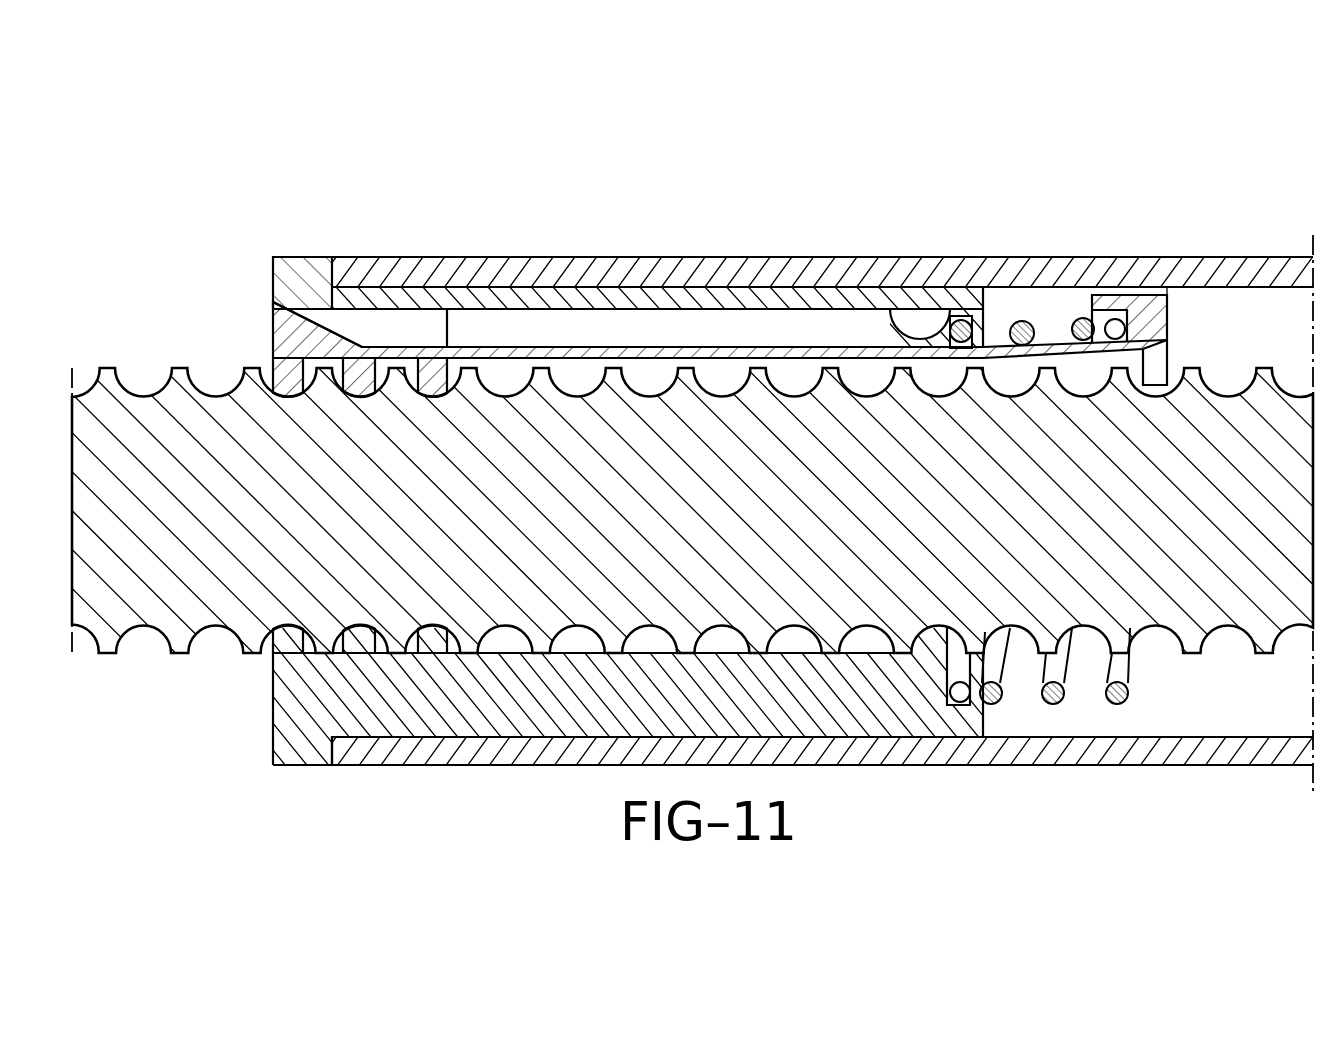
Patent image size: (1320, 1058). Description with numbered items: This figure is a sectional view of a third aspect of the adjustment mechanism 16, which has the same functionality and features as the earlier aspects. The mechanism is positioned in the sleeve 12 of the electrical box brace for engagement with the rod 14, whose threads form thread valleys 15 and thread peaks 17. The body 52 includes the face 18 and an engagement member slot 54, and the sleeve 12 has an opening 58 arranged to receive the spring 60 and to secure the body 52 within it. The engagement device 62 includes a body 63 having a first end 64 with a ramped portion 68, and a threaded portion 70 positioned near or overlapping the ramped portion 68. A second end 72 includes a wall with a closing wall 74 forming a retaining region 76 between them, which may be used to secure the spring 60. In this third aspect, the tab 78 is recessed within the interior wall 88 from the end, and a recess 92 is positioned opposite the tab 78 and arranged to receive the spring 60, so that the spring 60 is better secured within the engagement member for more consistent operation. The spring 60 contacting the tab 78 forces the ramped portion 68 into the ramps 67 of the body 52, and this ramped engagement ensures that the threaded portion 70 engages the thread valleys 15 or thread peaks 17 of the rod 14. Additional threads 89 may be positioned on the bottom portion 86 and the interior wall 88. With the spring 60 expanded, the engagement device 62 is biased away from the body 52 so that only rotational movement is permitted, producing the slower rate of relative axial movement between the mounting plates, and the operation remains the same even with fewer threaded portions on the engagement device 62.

The sleeve 12 is at (860, 256).
The rod 14 is at (660, 514).
The thread valleys 15 is at (660, 514).
The adjustment mechanism 16 is at (660, 469).
The thread peaks 17 is at (139, 394).
The face 18 is at (273, 722).
The body 52 is at (646, 311).
The engagement member slot 54 is at (396, 326).
The opening 58 is at (1247, 302).
The spring 60 is at (1022, 320).
The engagement device 62 is at (687, 321).
The body 63 is at (687, 321).
The first end 64 is at (687, 321).
The ramps 67 is at (276, 300).
The ramped portion 68 is at (687, 321).
The threaded portion 70 is at (300, 386).
The second end 72 is at (1145, 289).
The closing wall 74 is at (1110, 295).
The retaining region 76 is at (1088, 314).
The tab 78 is at (927, 337).
The bottom portion 86 is at (631, 691).
The interior wall 88 is at (631, 691).
The threads 89 is at (288, 633).
The recess 92 is at (955, 665).